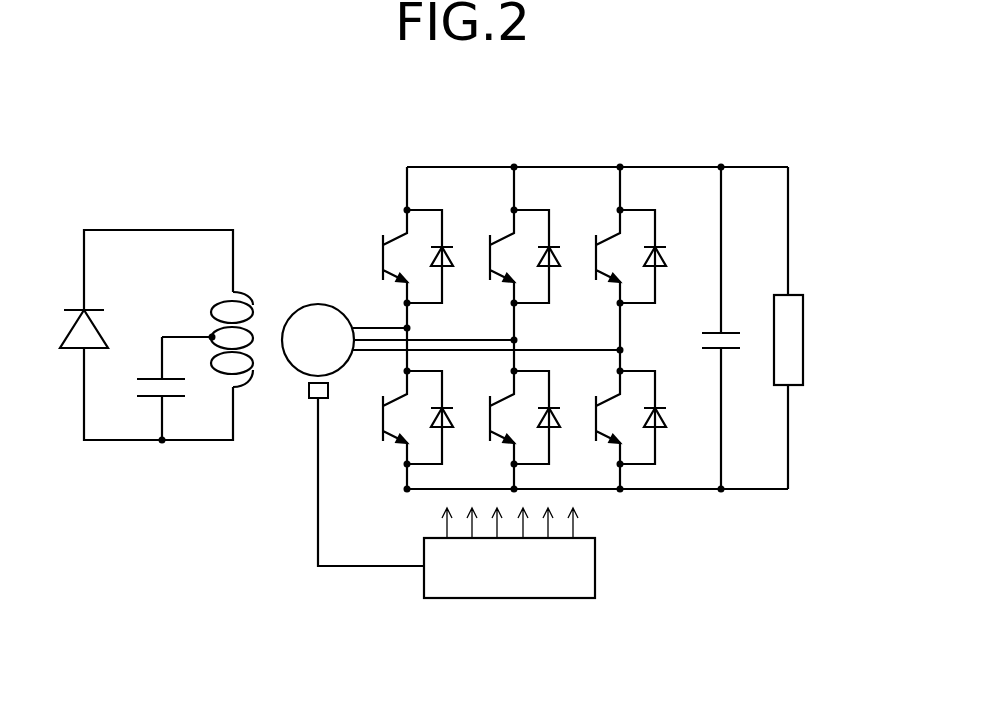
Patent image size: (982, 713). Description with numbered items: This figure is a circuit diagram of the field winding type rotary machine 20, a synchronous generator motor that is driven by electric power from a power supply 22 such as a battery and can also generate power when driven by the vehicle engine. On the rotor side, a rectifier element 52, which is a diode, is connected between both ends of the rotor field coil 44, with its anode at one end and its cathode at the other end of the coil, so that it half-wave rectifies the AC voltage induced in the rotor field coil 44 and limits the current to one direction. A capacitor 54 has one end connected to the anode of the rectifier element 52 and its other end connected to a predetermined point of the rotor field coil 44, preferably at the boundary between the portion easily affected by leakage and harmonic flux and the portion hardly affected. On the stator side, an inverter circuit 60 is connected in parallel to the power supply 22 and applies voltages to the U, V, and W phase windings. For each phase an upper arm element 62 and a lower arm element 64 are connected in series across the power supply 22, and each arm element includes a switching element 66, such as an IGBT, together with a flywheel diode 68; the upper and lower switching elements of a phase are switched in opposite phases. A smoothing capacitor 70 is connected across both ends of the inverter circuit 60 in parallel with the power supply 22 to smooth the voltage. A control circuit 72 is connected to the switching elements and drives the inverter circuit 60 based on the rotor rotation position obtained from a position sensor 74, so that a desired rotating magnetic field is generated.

The field winding type rotary machine 20 is at (333, 266).
The power supply 22 is at (803, 338).
The rotor field coil 44 is at (253, 293).
The rectifier element 52 is at (66, 350).
The capacitor 54 is at (143, 378).
The inverter circuit 60 is at (596, 340).
The upper arm element 62 is at (737, 83).
The lower arm element 64 is at (788, 502).
The switching element 66 is at (618, 237).
The flywheel diode 68 is at (657, 247).
The smoothing capacitor 70 is at (728, 332).
The control circuit 72 is at (522, 598).
The position sensor 74 is at (310, 400).